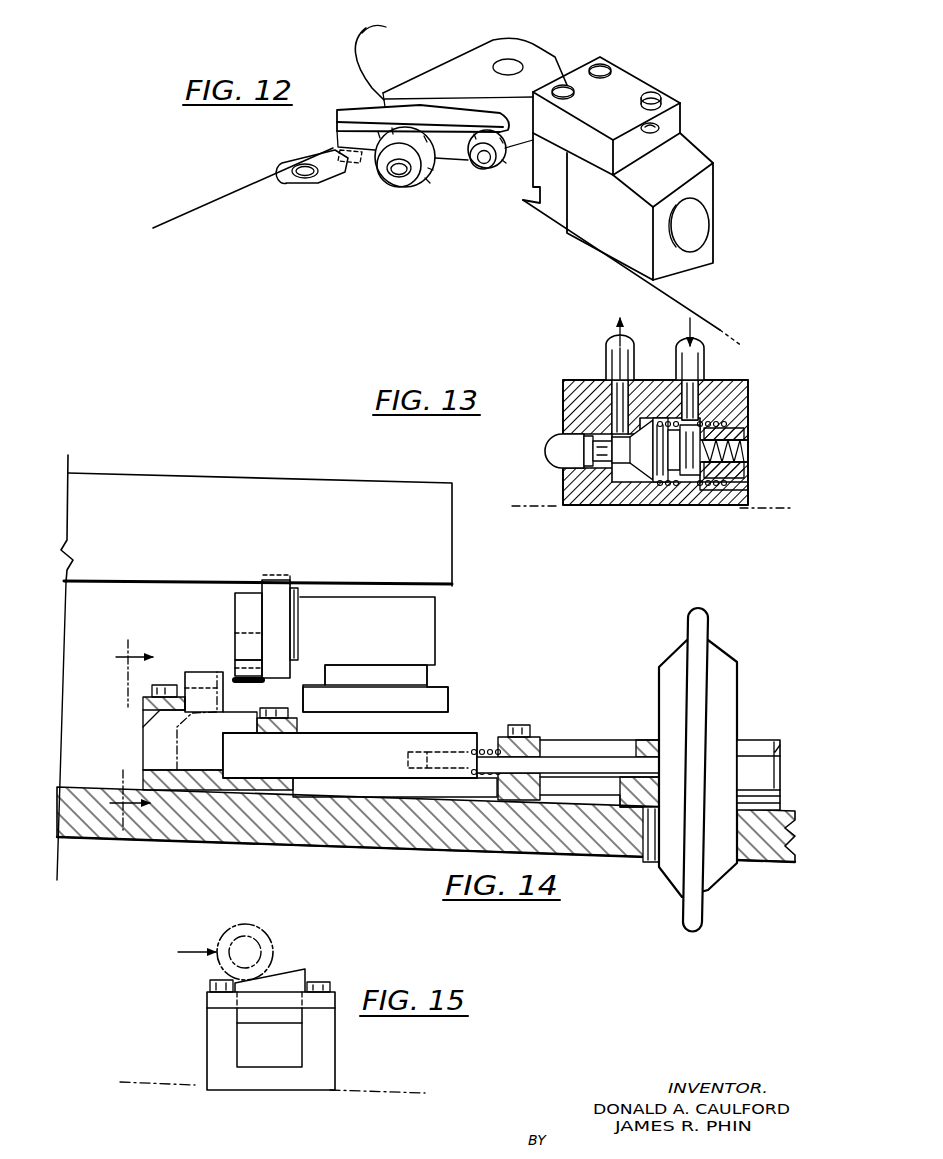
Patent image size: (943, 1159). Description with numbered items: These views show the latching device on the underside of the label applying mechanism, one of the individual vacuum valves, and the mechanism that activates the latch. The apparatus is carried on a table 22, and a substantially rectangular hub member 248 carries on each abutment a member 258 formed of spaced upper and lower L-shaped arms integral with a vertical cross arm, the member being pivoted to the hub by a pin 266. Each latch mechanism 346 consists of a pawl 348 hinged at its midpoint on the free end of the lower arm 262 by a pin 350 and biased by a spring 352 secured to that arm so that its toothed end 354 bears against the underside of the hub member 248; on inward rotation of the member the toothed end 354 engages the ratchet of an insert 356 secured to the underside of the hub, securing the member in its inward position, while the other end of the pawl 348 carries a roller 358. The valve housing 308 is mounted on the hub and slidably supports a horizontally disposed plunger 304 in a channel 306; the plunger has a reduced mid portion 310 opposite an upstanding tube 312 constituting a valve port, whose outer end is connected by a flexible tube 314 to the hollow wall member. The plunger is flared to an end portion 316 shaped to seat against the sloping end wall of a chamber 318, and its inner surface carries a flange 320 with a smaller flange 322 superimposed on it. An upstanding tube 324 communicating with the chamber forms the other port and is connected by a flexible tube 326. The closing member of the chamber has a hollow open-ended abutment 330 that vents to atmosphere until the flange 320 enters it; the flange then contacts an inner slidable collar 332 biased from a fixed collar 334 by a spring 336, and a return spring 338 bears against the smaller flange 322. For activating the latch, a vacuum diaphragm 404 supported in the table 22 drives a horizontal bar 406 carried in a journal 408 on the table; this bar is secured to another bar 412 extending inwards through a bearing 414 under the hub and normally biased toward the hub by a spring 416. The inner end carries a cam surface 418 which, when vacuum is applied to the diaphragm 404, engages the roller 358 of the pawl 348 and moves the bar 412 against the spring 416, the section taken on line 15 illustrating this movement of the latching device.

In FIG. 14, the section line 15— 15 is at (125, 734).
In FIG. 14, the table 22 is at (392, 832).
In FIG. 15, the table 22 is at (368, 1090).
In FIG. 12, the hub member 248 is at (247, 200).
In FIG. 13, the hub member 248 is at (540, 500).
In FIG. 14, the hub member 248 is at (316, 498).
In FIG. 12, the member 258 is at (682, 98).
In FIG. 12, the lower L-shaped arm 262 is at (423, 88).
In FIG. 14, the lower L-shaped arm 262 is at (415, 628).
In FIG. 12, the pin 266 is at (506, 67).
In FIG. 13, the plunger 304 is at (560, 440).
In FIG. 13, the channel 306 is at (612, 468).
In FIG. 13, the valve housing 308 is at (557, 388).
In FIG. 13, the reduced mid portion of plunger 310 is at (618, 462).
In FIG. 13, the upstanding tube 312 is at (616, 418).
In FIG. 13, the flexible tube 314 is at (610, 348).
In FIG. 13, the flared end portion 316 is at (645, 440).
In FIG. 13, the chamber 318 is at (662, 485).
In FIG. 13, the flange 320 is at (676, 478).
In FIG. 13, the smaller flange 322 is at (690, 476).
In FIG. 13, the upstanding tube 324 is at (690, 405).
In FIG. 13, the flexible tube 326 is at (698, 358).
In FIG. 13, the hollow abutment 330 is at (726, 420).
In FIG. 13, the inner slidable collar 332 is at (730, 430).
In FIG. 13, the fixed collar 334 is at (744, 450).
In FIG. 13, the spring 336 is at (744, 466).
In FIG. 13, the return spring 338 is at (722, 488).
In FIG. 12, the latch mechanism 346 is at (451, 190).
In FIG. 12, the pawl 348 is at (362, 107).
In FIG. 14, the pawl 348 is at (232, 618).
In FIG. 12, the pin 350 is at (397, 170).
In FIG. 12, the spring 352 is at (380, 54).
In FIG. 12, the toothed end 354 is at (350, 165).
In FIG. 14, the toothed end 354 is at (275, 572).
In FIG. 12, the insert 356 is at (312, 157).
In FIG. 12, the roller 358 is at (497, 172).
In FIG. 14, the roller 358 is at (240, 662).
In FIG. 15, the roller 358 is at (272, 945).
In FIG. 14, the vacuum diaphragm 404 is at (670, 662).
In FIG. 14, the horizontal bar 406 is at (586, 760).
In FIG. 14, the journal 408 is at (532, 742).
In FIG. 14, the bar 412 is at (442, 737).
In FIG. 14, the bearing 414 is at (320, 783).
In FIG. 14, the spring 416 is at (490, 750).
In FIG. 14, the cam surface 418 is at (200, 673).
In FIG. 15, the cam surface 418 is at (305, 969).